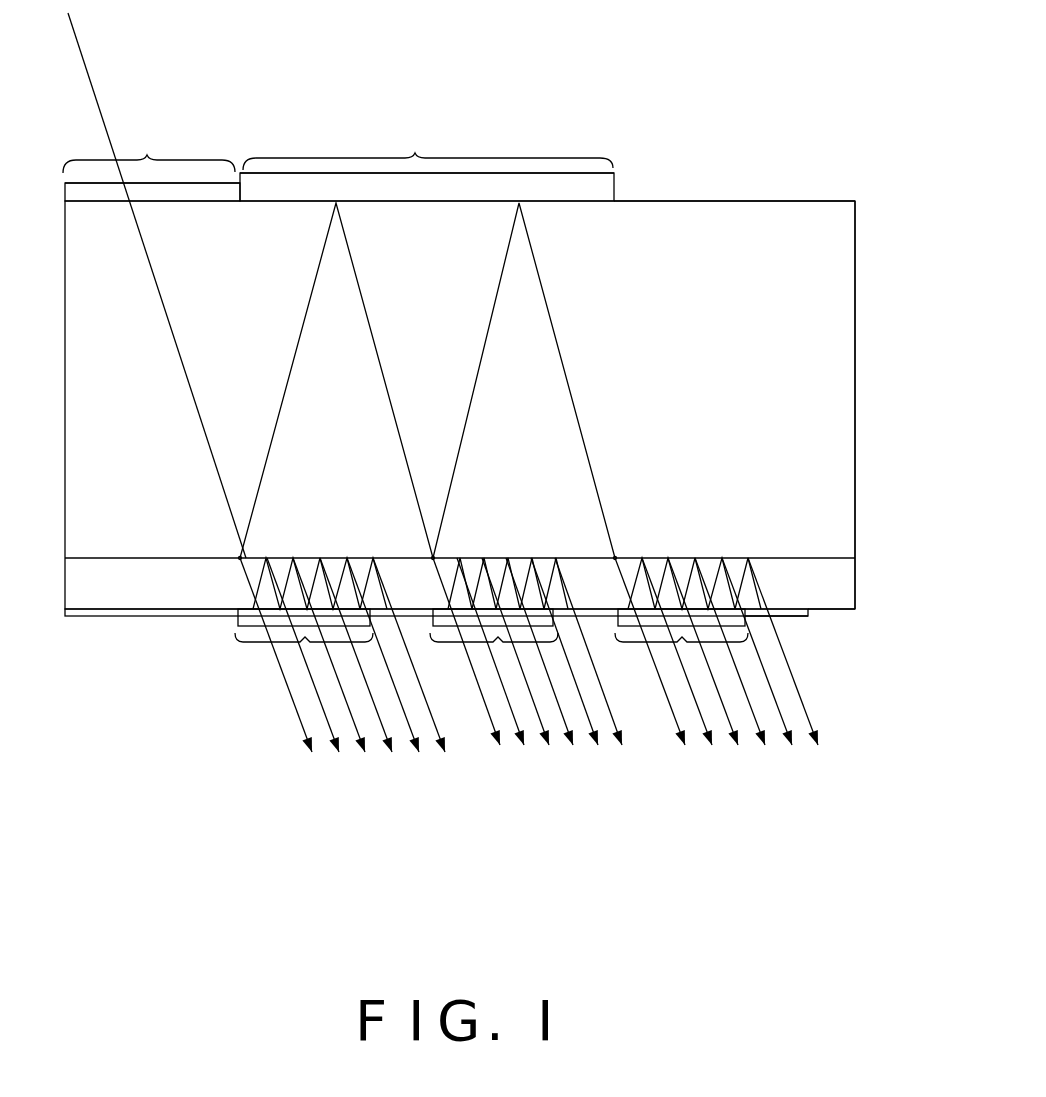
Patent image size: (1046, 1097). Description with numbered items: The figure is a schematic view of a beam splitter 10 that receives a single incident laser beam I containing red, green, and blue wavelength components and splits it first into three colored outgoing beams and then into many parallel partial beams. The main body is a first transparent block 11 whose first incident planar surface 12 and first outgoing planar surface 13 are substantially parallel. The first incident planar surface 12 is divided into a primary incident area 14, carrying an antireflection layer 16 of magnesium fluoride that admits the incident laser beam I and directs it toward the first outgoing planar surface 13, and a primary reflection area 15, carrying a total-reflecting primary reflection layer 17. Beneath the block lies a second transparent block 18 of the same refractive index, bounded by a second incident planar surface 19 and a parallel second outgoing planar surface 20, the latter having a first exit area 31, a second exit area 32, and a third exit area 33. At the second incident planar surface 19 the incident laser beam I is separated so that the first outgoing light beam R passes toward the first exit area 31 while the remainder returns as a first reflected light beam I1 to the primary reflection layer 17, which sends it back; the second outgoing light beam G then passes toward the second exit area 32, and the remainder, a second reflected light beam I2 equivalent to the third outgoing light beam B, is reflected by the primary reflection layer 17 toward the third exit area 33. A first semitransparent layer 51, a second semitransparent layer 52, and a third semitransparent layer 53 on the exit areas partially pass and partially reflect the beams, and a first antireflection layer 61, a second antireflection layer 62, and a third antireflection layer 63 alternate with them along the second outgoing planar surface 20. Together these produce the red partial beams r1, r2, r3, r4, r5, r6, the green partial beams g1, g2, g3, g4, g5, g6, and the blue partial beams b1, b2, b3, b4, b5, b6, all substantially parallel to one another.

The beam splitter 10 is at (710, 100).
The first transparent block 11 is at (745, 220).
The first incident planar surface 12 is at (653, 201).
The first outgoing planar surface 13 is at (138, 560).
The primary incident area 14 is at (151, 162).
The primary reflection area 15 is at (427, 161).
The antireflection layer 16 is at (188, 180).
The primary reflection layer 17 is at (487, 173).
The second transparent block 18 is at (780, 573).
The second incident planar surface 19 is at (828, 556).
The second outgoing planar surface 20 is at (88, 617).
The first exit area 31 is at (308, 645).
The second exit area 32 is at (555, 620).
The third exit area 33 is at (683, 647).
The first semitransparent layer 51 is at (263, 633).
The second semitransparent layer 52 is at (500, 647).
The third semitransparent layer 53 is at (735, 634).
The first antireflection layer 61 is at (465, 630).
The second antireflection layer 62 is at (650, 632).
The third antireflection layer 63 is at (788, 614).
The incident laser beam I is at (92, 70).
The first reflected light beam I1 is at (287, 390).
The second reflected light beam I2 is at (475, 390).
The first outgoing light beam R is at (227, 570).
The second outgoing light beam G is at (423, 570).
The third outgoing light beam B is at (600, 570).
The partial light beam r1 is at (306, 728).
The partial light beam r2 is at (333, 728).
The partial light beam r3 is at (359, 728).
The partial light beam r4 is at (386, 728).
The partial light beam r5 is at (413, 728).
The partial light beam r6 is at (439, 728).
The partial light beam g1 is at (500, 725).
The partial light beam g2 is at (524, 725).
The partial light beam g3 is at (549, 725).
The partial light beam g4 is at (573, 725).
The partial light beam g5 is at (598, 725).
The partial light beam g6 is at (622, 725).
The partial light beam b1 is at (685, 725).
The partial light beam b2 is at (712, 725).
The partial light beam b3 is at (738, 725).
The partial light beam b4 is at (765, 725).
The partial light beam b5 is at (792, 725).
The partial light beam b6 is at (818, 725).